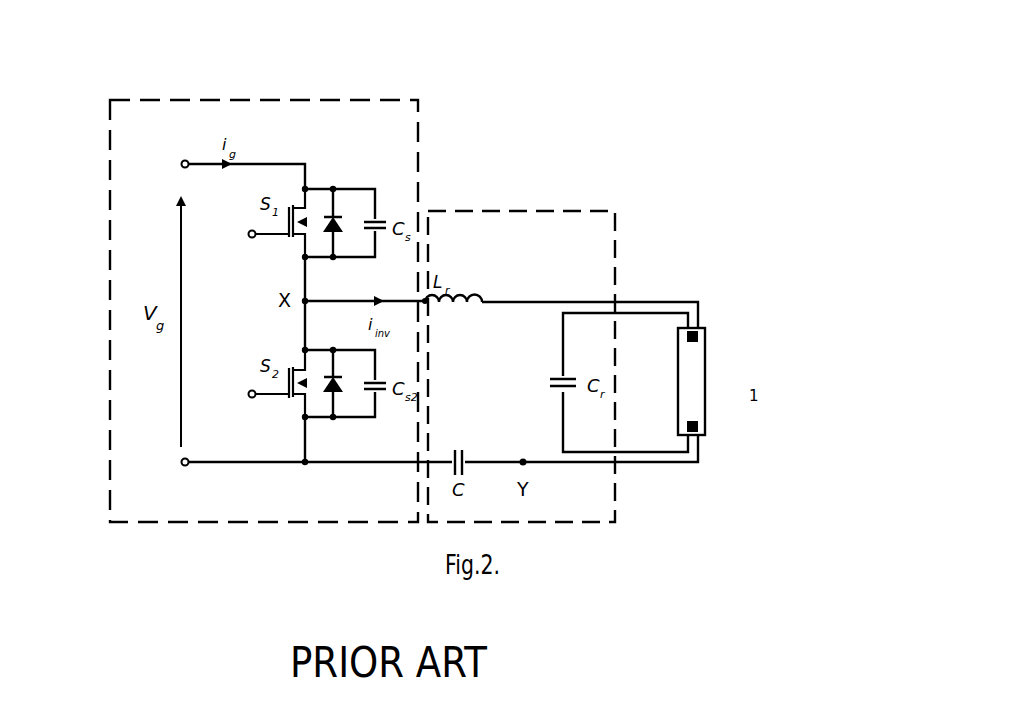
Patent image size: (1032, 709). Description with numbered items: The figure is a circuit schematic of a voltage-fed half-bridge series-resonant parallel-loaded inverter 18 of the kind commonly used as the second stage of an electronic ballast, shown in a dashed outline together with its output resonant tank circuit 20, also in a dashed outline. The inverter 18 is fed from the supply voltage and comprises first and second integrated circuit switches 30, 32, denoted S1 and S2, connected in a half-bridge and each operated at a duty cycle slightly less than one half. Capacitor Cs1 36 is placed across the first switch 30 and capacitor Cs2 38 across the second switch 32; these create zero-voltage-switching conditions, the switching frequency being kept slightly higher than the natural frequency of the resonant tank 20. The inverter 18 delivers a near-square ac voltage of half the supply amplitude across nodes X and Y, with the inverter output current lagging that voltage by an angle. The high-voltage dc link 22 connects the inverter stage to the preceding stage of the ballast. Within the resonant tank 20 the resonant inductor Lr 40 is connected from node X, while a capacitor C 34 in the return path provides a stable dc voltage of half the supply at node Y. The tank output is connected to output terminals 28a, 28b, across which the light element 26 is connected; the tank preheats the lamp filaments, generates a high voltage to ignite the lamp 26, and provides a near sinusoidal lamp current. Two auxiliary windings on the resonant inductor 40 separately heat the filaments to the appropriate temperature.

The high-frequency inverter 18 is at (255, 97).
The output resonant tank circuit 20 is at (620, 249).
The high-voltage dc link 22 is at (425, 300).
The light element 26 is at (707, 373).
The output terminal 28a is at (698, 316).
The output terminal 28b is at (700, 443).
The first integrated circuit switch 30 is at (267, 236).
The second integrated circuit switch 32 is at (270, 396).
The capacitor C 34 is at (463, 453).
The capacitor Cs1 36 is at (380, 221).
The capacitor Cs2 38 is at (380, 375).
The resonant inductor Lr 40 is at (480, 288).